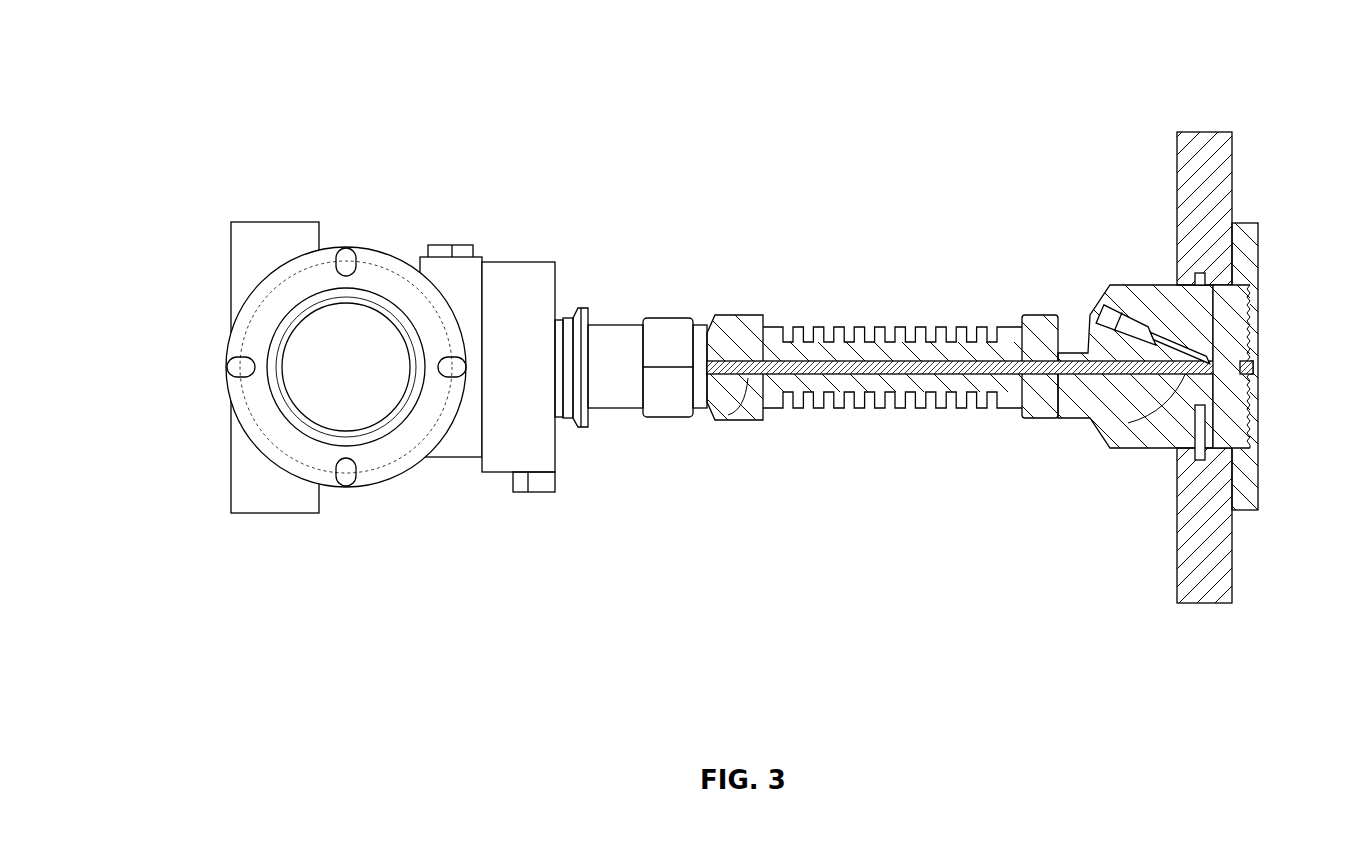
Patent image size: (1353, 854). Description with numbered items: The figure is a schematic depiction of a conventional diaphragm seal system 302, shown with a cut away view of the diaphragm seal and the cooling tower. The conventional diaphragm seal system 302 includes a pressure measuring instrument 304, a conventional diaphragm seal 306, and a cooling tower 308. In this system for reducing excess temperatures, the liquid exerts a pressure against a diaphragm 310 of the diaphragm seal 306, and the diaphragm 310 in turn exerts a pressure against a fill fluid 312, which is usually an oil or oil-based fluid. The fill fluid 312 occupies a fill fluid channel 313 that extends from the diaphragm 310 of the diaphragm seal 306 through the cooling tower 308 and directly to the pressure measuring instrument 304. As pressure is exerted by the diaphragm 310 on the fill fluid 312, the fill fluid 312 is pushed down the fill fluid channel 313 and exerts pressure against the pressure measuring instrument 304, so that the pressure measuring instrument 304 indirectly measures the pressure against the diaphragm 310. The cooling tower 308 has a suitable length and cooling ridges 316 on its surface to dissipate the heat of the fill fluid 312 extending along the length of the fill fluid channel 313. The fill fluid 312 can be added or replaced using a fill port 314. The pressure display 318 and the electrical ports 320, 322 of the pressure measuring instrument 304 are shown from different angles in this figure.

The conventional diaphragm seal system 302 is at (220, 108).
The pressure measuring instrument 304 is at (402, 437).
The conventional diaphragm seal 306 is at (1197, 409).
The cooling tower 308 is at (904, 475).
The diaphragm 310 is at (1262, 367).
The fill fluid 312 is at (1043, 367).
The fill fluid channel 313 is at (1117, 430).
The fill port 314 is at (1100, 304).
The cooling ridges 316 is at (843, 327).
The pressure display 318 is at (300, 367).
The electrical port 320 is at (276, 222).
The electrical port 322 is at (275, 513).